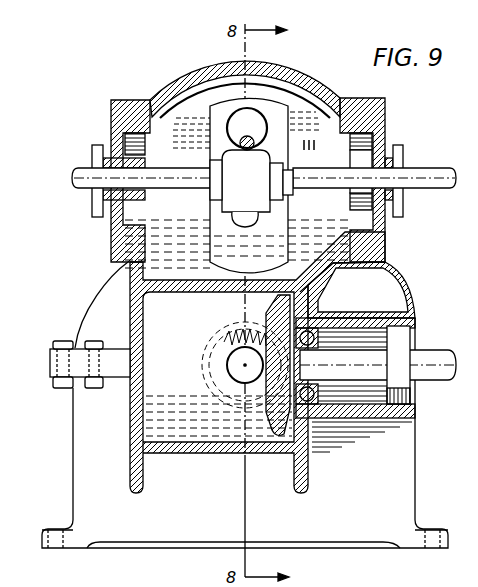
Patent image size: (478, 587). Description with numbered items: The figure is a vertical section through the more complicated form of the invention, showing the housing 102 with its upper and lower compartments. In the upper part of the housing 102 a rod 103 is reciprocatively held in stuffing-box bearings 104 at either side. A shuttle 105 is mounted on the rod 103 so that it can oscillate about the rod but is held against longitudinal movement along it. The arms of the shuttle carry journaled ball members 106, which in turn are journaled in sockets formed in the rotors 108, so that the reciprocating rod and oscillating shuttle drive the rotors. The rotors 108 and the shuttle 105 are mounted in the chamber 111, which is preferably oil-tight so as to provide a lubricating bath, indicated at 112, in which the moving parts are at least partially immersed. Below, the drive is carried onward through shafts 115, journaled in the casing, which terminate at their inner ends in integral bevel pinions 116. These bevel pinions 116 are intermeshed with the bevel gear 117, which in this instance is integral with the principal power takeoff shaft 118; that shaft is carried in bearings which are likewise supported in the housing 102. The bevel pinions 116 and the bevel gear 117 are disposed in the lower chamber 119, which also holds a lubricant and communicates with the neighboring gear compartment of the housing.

The housing 102 is at (201, 74).
The rod 103 is at (264, 179).
The stuffing-box bearings 104 is at (92, 200).
The shuttle 105 is at (251, 188).
The ball members 106 is at (247, 129).
The rotors 108 is at (249, 185).
The chamber 111 is at (314, 147).
The lubricating bath 112 is at (237, 244).
The shafts 115 is at (236, 357).
The bevel pinions 116 is at (213, 377).
The bevel gear 117 is at (270, 409).
The principal power takeoff shaft 118 is at (376, 368).
The chamber 119 is at (219, 368).